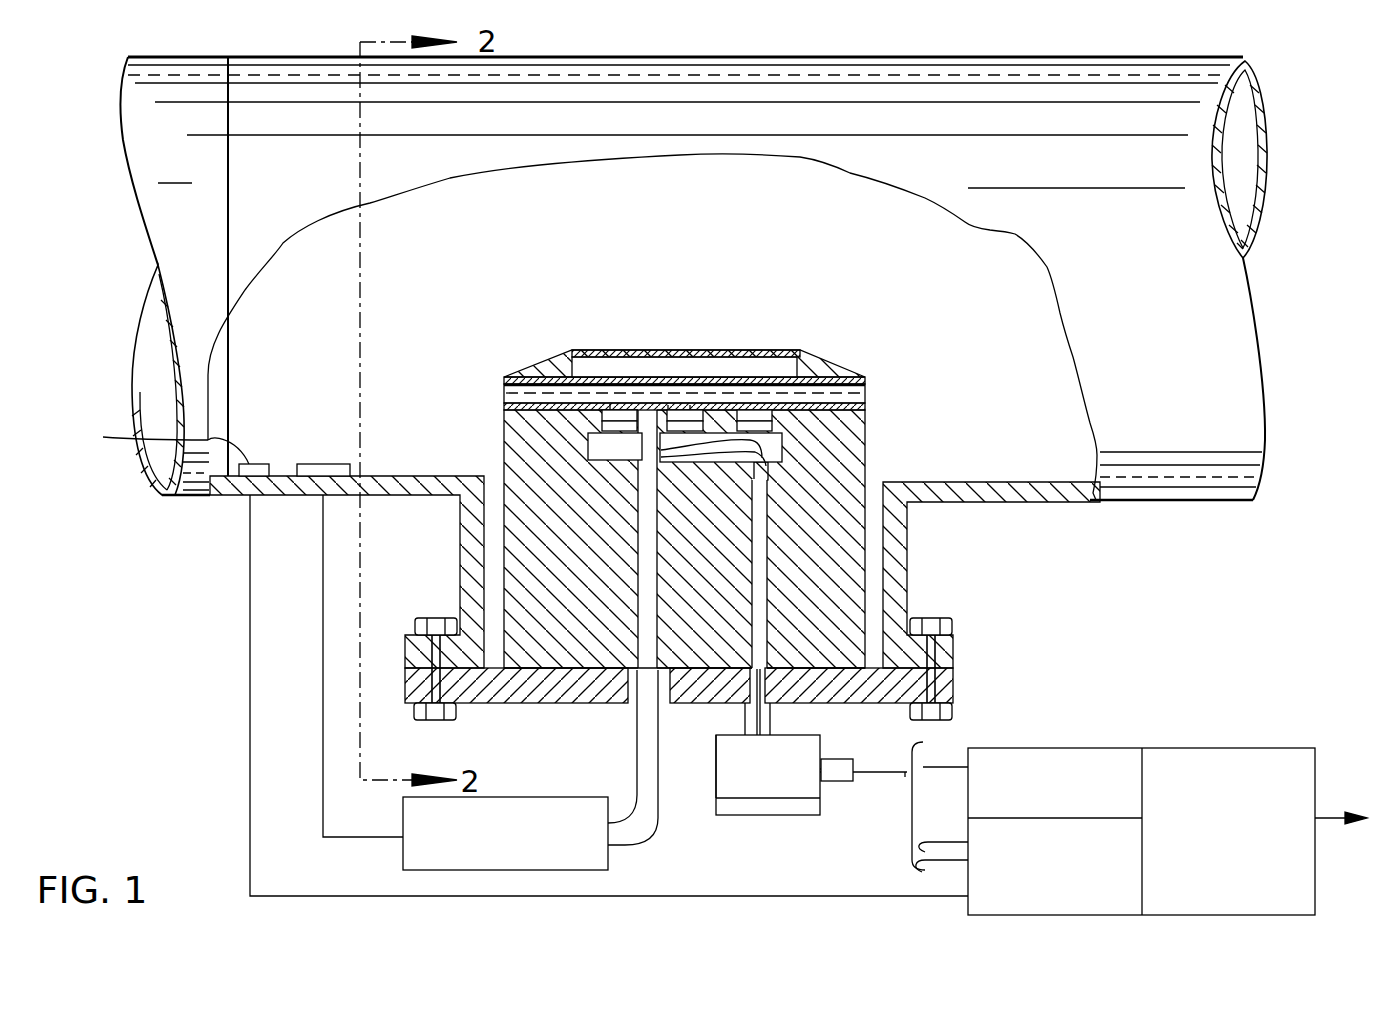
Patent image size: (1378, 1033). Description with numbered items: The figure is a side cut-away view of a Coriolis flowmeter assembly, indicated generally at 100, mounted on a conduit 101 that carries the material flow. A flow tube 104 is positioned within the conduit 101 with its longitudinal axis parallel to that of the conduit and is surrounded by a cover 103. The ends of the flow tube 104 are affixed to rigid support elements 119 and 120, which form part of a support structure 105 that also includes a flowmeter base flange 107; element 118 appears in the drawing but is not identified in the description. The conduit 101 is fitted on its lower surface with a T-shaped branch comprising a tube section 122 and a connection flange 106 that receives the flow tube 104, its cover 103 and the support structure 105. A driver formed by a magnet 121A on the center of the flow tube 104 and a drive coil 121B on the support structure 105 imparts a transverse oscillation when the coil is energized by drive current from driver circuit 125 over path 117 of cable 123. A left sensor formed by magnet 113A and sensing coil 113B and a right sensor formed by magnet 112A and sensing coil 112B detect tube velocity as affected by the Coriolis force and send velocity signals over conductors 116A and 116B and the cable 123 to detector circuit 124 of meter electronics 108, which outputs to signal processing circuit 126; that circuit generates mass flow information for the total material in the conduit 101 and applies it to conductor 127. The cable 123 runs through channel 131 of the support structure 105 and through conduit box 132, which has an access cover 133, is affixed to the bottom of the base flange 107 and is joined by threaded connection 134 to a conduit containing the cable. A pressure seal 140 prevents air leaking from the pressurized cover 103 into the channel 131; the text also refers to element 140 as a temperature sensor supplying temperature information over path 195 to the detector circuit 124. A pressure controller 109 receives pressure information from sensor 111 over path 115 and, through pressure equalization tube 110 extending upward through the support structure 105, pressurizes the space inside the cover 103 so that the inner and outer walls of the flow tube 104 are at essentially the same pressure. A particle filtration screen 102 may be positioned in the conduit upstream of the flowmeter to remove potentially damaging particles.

The sensor assembly 100 is at (702, 318).
The conduit 101 is at (1100, 230).
The particle filtration screen 102 is at (232, 185).
The cover 103 is at (775, 350).
The flow tube 104 is at (820, 393).
The support structure 105 is at (837, 557).
The connection flange 106 is at (952, 646).
The flowmeter base flange 107 is at (953, 688).
The meter electronics 108 is at (1168, 690).
The pressure controller 109 is at (494, 797).
The pressure equalization tube 110 is at (648, 581).
The sensor 111 is at (322, 464).
The magnet 112A is at (748, 410).
The sensing coil 112B is at (785, 415).
The magnet 113A is at (612, 410).
The sensing coil 113B is at (600, 418).
The path 115 is at (323, 703).
The conductor 116A is at (615, 435).
The conductor 116B is at (866, 455).
The path 117 is at (720, 440).
The body bottom 118 is at (635, 668).
The support element 119 is at (510, 402).
The support element 120 is at (866, 427).
The magnet 121A is at (668, 410).
The drive coil 121B is at (690, 410).
The tube section 122 is at (460, 560).
The cable 123 is at (906, 775).
The detector circuit 124 is at (1024, 911).
The driver circuit 125 is at (1065, 750).
The signal processing circuit 126 is at (1202, 911).
The conductor 127 is at (1340, 816).
The channel 131 is at (770, 620).
The conduit box 132 is at (716, 765).
The access cover 133 is at (760, 816).
The threaded connection 134 is at (835, 760).
The pressure seal 140 is at (805, 488).
The path 195 is at (250, 735).